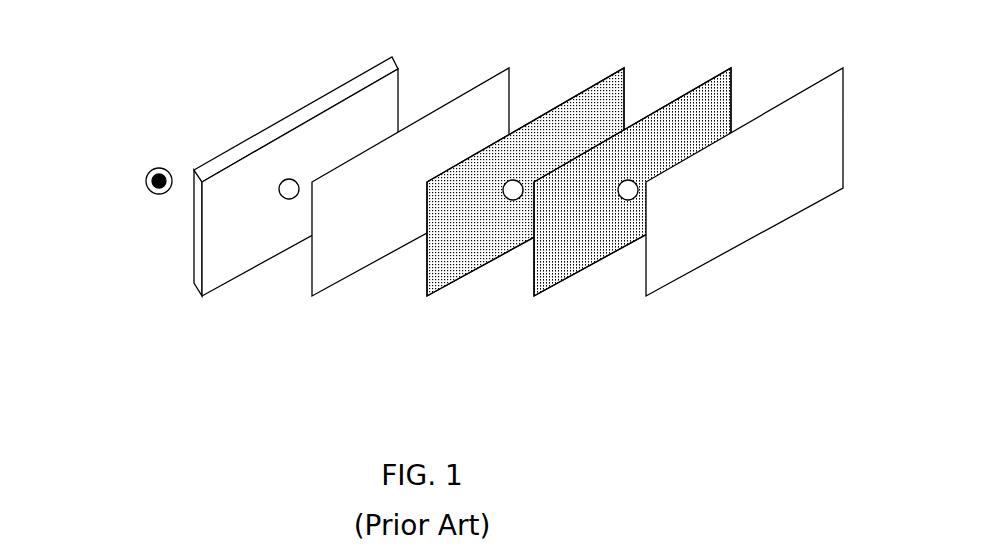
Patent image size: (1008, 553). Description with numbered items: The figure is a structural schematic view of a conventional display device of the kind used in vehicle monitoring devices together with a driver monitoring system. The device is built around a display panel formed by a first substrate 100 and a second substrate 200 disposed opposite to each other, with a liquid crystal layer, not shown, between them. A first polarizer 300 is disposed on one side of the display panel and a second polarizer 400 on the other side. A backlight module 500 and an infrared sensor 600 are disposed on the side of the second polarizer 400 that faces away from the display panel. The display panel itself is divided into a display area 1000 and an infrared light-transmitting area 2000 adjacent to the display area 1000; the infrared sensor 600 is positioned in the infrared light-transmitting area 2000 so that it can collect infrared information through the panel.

The display area 1000 is at (457, 202).
The infrared light-transmitting area 2000 is at (294, 179).
The infrared sensor 600 is at (137, 189).
The backlight module 500 is at (296, 210).
The second polarizer 400 is at (349, 288).
The first substrate 100 is at (469, 287).
The second substrate 200 is at (581, 285).
The first polarizer 300 is at (766, 239).